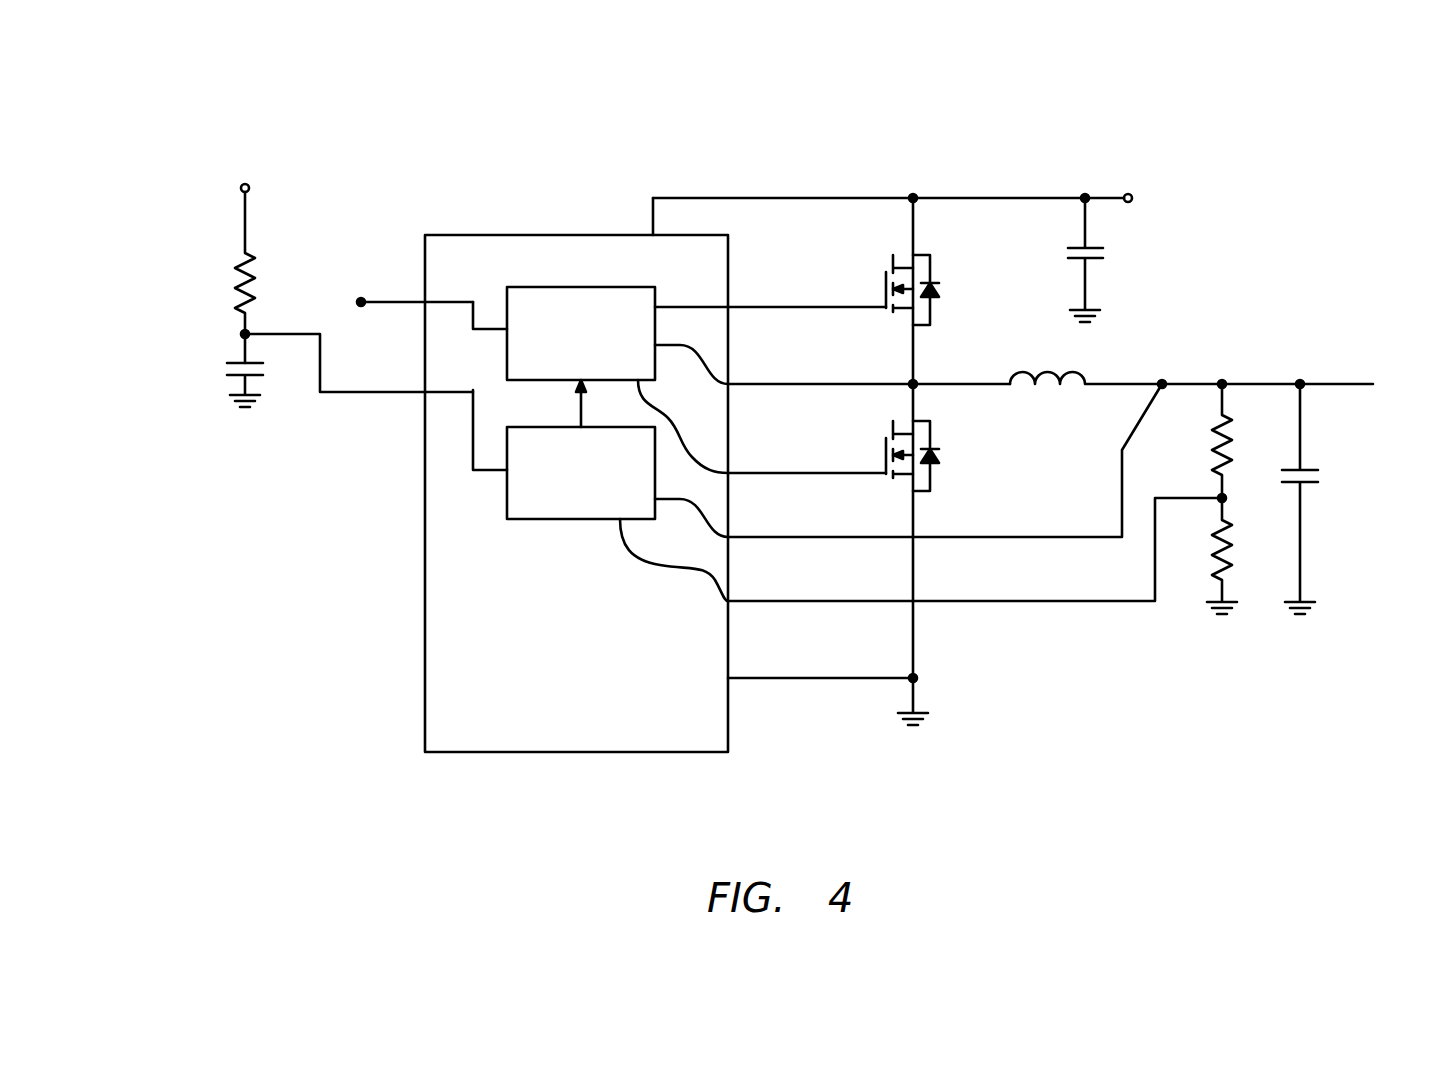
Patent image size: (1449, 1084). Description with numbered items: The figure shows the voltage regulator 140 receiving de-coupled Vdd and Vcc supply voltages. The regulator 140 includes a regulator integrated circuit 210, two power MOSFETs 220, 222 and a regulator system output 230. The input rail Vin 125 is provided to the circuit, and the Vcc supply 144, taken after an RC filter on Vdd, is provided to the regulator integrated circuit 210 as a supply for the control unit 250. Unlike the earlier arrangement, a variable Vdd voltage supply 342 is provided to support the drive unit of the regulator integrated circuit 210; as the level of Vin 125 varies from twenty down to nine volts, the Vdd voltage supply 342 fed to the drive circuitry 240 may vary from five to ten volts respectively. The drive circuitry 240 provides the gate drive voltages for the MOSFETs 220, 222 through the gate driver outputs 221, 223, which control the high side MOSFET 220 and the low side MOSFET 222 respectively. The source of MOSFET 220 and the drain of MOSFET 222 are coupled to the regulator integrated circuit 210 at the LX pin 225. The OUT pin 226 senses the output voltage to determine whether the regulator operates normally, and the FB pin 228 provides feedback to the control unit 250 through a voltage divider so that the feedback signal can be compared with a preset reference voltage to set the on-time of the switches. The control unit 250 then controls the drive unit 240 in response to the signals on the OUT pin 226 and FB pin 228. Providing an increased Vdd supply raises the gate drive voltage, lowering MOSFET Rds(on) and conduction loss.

The voltage regulator 140 is at (203, 772).
The Vcc supply 144 is at (243, 333).
The variable Vdd voltage supply 342 is at (358, 300).
The regulator integrated circuit 210 is at (618, 752).
The drive circuitry 240 is at (557, 287).
The control unit 250 is at (525, 520).
The gate driver output 221 is at (762, 307).
The LX pin 225 is at (762, 384).
The gate driver output 223 is at (762, 473).
The OUT pin 226 is at (762, 537).
The FB pin 228 is at (762, 601).
The power MOSFET 220 is at (942, 268).
The power MOSFET 222 is at (942, 458).
The Vin 125 is at (1187, 196).
The regulator system output 230 is at (1350, 378).